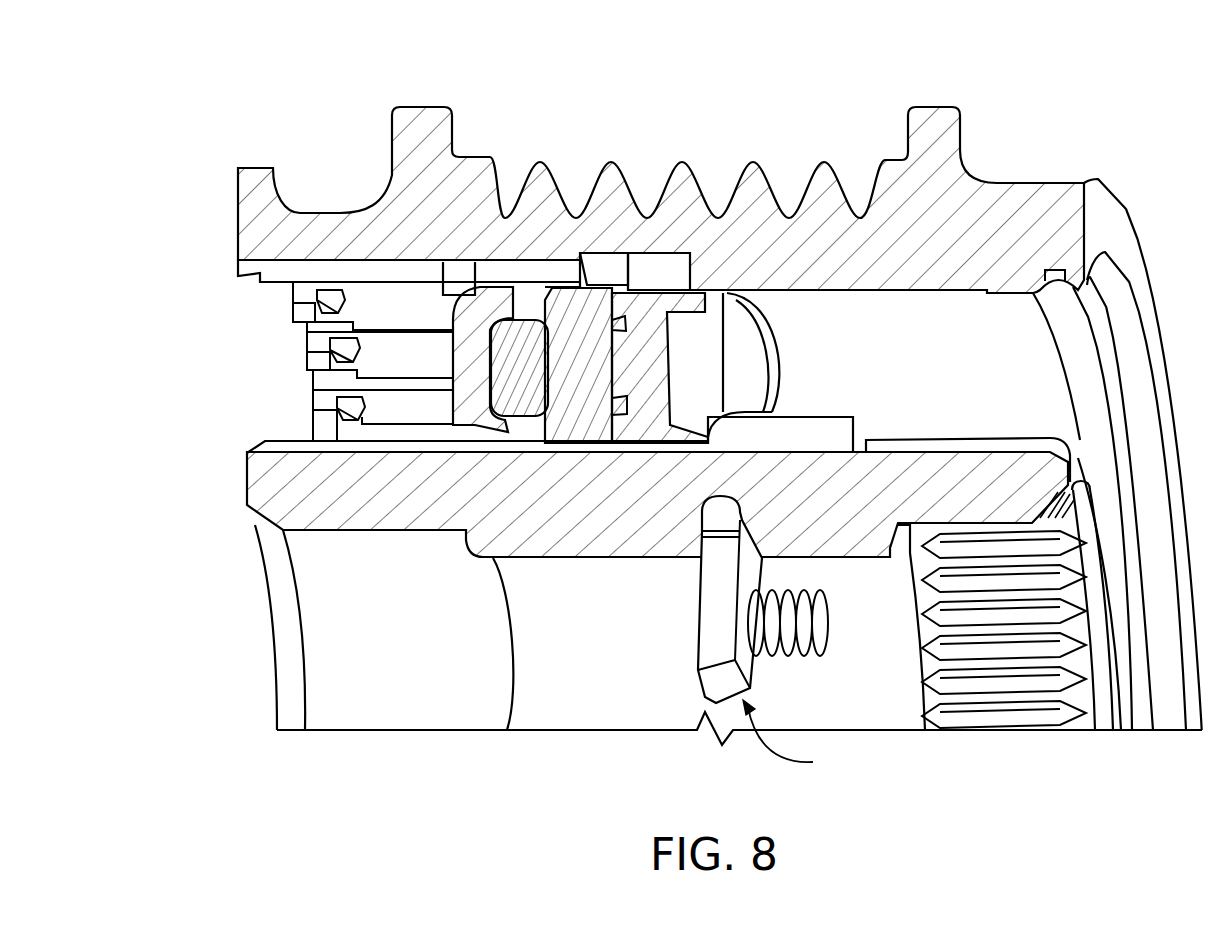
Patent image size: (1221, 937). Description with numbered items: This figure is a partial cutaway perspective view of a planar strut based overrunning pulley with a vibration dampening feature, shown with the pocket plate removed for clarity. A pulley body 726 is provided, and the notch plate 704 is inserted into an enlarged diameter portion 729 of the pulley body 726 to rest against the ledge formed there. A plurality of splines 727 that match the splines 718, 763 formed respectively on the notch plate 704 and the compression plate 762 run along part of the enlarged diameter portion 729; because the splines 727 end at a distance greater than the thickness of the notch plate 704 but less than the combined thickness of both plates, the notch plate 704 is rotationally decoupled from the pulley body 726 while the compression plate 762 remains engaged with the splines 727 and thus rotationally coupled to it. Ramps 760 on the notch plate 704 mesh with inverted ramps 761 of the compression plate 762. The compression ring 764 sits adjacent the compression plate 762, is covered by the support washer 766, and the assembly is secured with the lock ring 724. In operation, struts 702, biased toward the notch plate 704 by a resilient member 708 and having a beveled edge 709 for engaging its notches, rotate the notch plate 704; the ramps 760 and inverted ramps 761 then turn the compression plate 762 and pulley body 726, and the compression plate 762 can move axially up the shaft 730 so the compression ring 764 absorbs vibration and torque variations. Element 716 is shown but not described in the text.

The strut 702 is at (700, 613).
The notch plate 704 is at (652, 400).
The resilient member 708 is at (828, 622).
The beveled edge 709 is at (808, 739).
The spring clip 716 is at (697, 368).
The splines 718 is at (670, 275).
The lock ring 724 is at (458, 284).
The pulley body 726 is at (933, 106).
The splines 727 is at (387, 283).
The enlarged diameter portion 729 is at (667, 250).
The shaft 730 is at (247, 483).
The ramps 760 is at (620, 398).
The inverted ramps 761 is at (612, 383).
The compression plate 762 is at (578, 421).
The splines 763 is at (600, 273).
The compression ring 764 is at (519, 393).
The support washer 766 is at (464, 397).